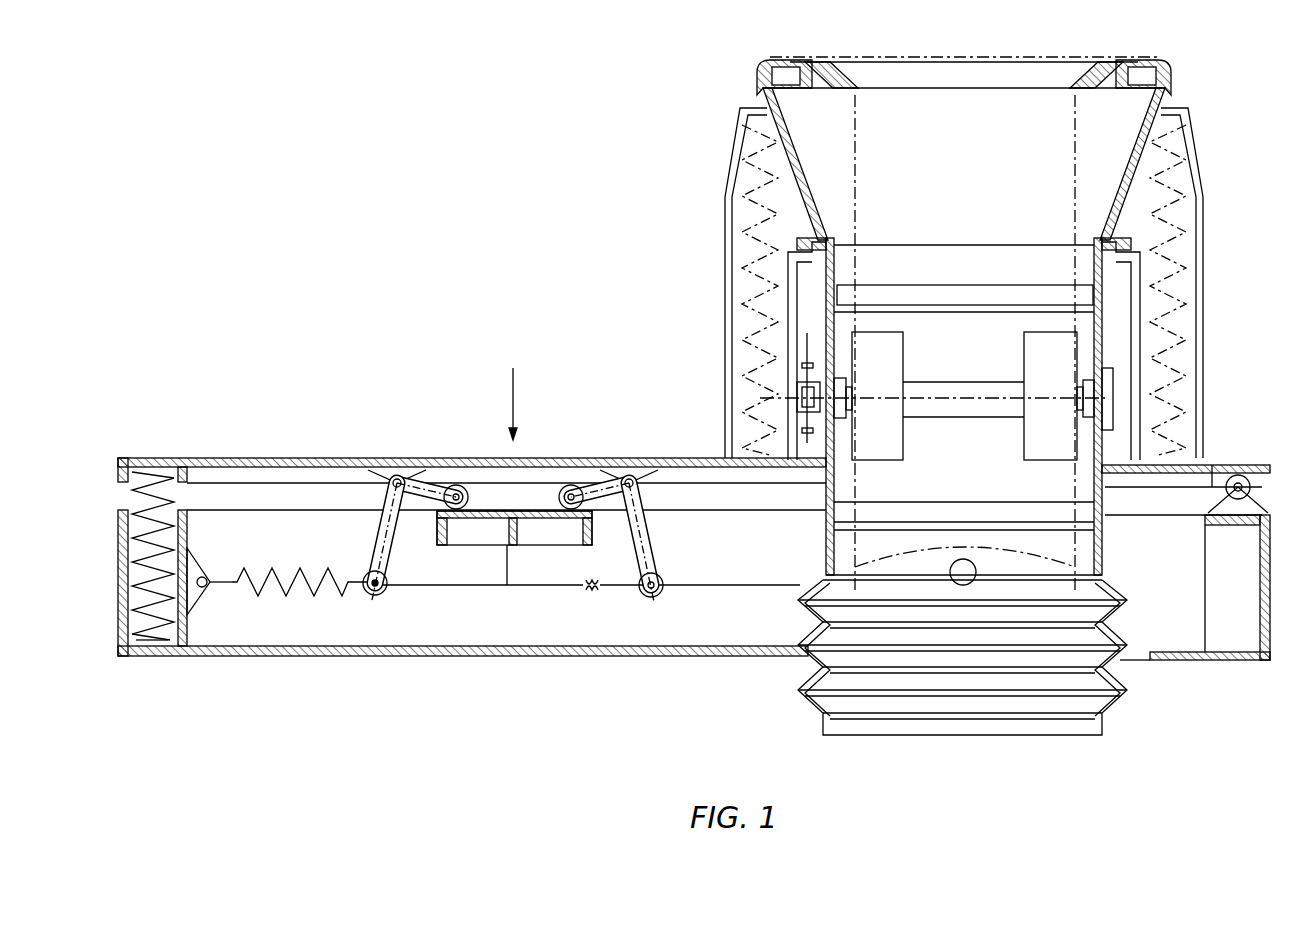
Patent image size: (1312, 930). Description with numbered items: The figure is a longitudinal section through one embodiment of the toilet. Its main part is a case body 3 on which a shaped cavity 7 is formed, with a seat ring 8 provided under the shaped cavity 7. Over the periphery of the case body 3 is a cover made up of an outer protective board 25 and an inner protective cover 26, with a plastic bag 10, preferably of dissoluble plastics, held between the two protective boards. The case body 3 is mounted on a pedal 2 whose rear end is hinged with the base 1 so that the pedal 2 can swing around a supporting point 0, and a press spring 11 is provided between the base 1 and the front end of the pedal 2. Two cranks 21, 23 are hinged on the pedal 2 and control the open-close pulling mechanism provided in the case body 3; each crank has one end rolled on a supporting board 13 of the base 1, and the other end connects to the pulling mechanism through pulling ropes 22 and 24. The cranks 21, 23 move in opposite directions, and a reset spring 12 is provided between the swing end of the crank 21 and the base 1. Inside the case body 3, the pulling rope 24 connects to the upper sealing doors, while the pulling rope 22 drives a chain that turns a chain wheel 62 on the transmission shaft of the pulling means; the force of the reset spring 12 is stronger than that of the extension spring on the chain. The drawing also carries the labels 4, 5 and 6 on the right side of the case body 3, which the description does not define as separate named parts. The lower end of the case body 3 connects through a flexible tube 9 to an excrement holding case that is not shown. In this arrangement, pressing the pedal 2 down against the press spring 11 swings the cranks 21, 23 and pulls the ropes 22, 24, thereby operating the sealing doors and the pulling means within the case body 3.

The supporting point 0 is at (1240, 467).
The base 1 is at (420, 657).
The pedal 2 is at (280, 470).
The case body 3 is at (1135, 340).
The right casing 4 is at (1150, 262).
The lower chamber 5 is at (1020, 505).
The side member 6 is at (1093, 395).
The shaped cavity 7 is at (1135, 190).
The seat ring 8 is at (1172, 85).
The flexible tube 9 is at (1125, 690).
The plastic bag 10 is at (765, 360).
The press spring 11 is at (145, 642).
The reset spring 12 is at (300, 592).
The supporting board 13 is at (528, 540).
The crank 21 is at (380, 512).
The pulling rope 22 is at (505, 545).
The crank 23 is at (600, 507).
The pulling rope 24 is at (718, 578).
The outer protective board 25 is at (785, 292).
The inner protective cover 26 is at (790, 332).
The chain wheel 62 is at (805, 400).